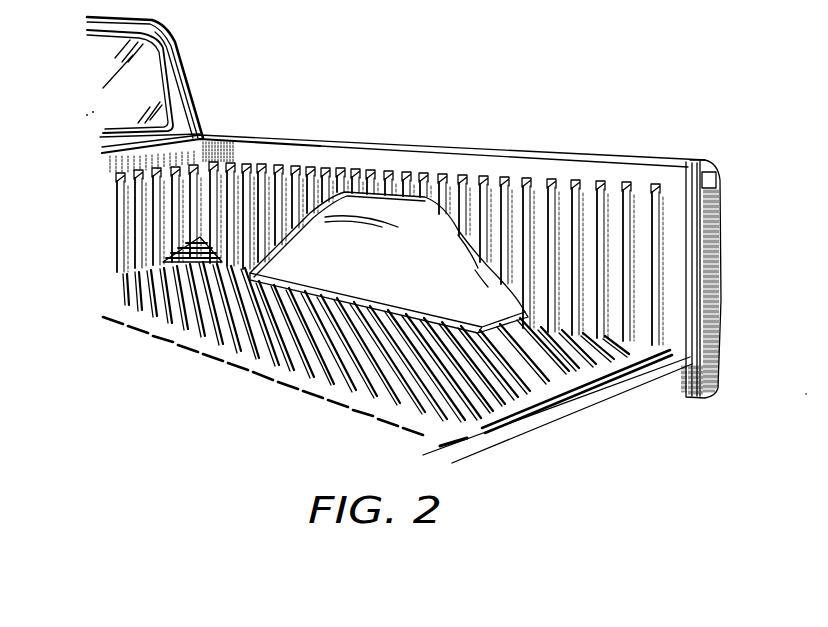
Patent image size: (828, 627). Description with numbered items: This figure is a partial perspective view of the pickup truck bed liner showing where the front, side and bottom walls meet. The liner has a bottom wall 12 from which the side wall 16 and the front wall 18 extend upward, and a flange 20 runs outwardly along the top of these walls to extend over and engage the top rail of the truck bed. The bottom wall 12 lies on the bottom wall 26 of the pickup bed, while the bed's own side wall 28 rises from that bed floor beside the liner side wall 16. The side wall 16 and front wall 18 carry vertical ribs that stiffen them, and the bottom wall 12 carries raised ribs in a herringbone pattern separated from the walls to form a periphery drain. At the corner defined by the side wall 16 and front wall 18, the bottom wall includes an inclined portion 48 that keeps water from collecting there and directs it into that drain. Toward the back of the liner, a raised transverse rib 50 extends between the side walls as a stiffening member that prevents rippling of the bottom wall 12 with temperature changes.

The bottom wall 12 is at (552, 368).
The side wall 16 is at (677, 227).
The front wall 18 is at (176, 199).
The flange 20 is at (382, 210).
The bottom wall of the bed 26 is at (653, 377).
The side wall 28 is at (708, 296).
The inclined portion 48 is at (197, 252).
The raised transverse rib 50 is at (503, 440).